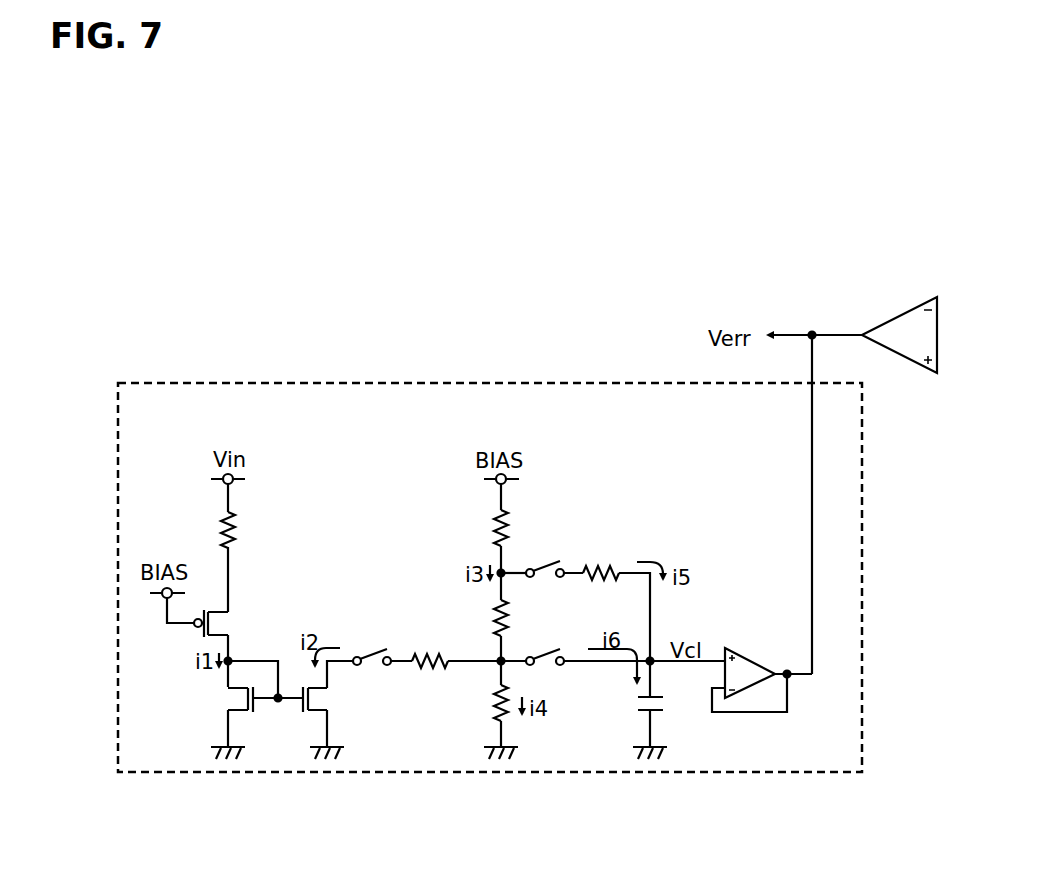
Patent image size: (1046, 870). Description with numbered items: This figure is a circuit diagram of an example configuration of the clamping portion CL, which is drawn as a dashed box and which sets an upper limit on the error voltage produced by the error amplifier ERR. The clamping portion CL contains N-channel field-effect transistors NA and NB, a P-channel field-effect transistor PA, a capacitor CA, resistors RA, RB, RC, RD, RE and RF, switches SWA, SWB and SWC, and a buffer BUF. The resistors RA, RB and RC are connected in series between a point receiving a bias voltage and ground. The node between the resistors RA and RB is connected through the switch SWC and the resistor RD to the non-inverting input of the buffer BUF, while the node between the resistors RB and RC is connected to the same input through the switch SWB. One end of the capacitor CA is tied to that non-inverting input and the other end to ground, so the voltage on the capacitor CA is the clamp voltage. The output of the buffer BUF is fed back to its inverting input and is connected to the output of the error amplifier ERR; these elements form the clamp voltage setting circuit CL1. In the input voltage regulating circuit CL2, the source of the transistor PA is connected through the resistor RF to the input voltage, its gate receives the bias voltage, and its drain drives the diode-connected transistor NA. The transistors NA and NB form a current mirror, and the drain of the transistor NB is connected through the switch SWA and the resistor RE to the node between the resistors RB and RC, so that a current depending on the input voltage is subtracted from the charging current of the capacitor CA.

The clamping portion CL is at (490, 383).
The clamp voltage setting circuit CL1 is at (717, 532).
The input voltage regulating circuit CL2 is at (350, 583).
The resistor RF is at (243, 531).
The P-channel field-effect transistor PA is at (223, 624).
The N-channel field-effect transistor NA is at (234, 699).
The N-channel field-effect transistor NB is at (329, 699).
The switch SWA is at (374, 648).
The resistor RE is at (413, 678).
The resistor RA is at (489, 532).
The resistor RB is at (489, 619).
The resistor RC is at (489, 707).
The resistor RD is at (609, 559).
The switch SWB is at (547, 647).
The switch SWC is at (547, 559).
The capacitor CA is at (637, 707).
The buffer BUF is at (750, 658).
The error amplifier ERR is at (898, 314).